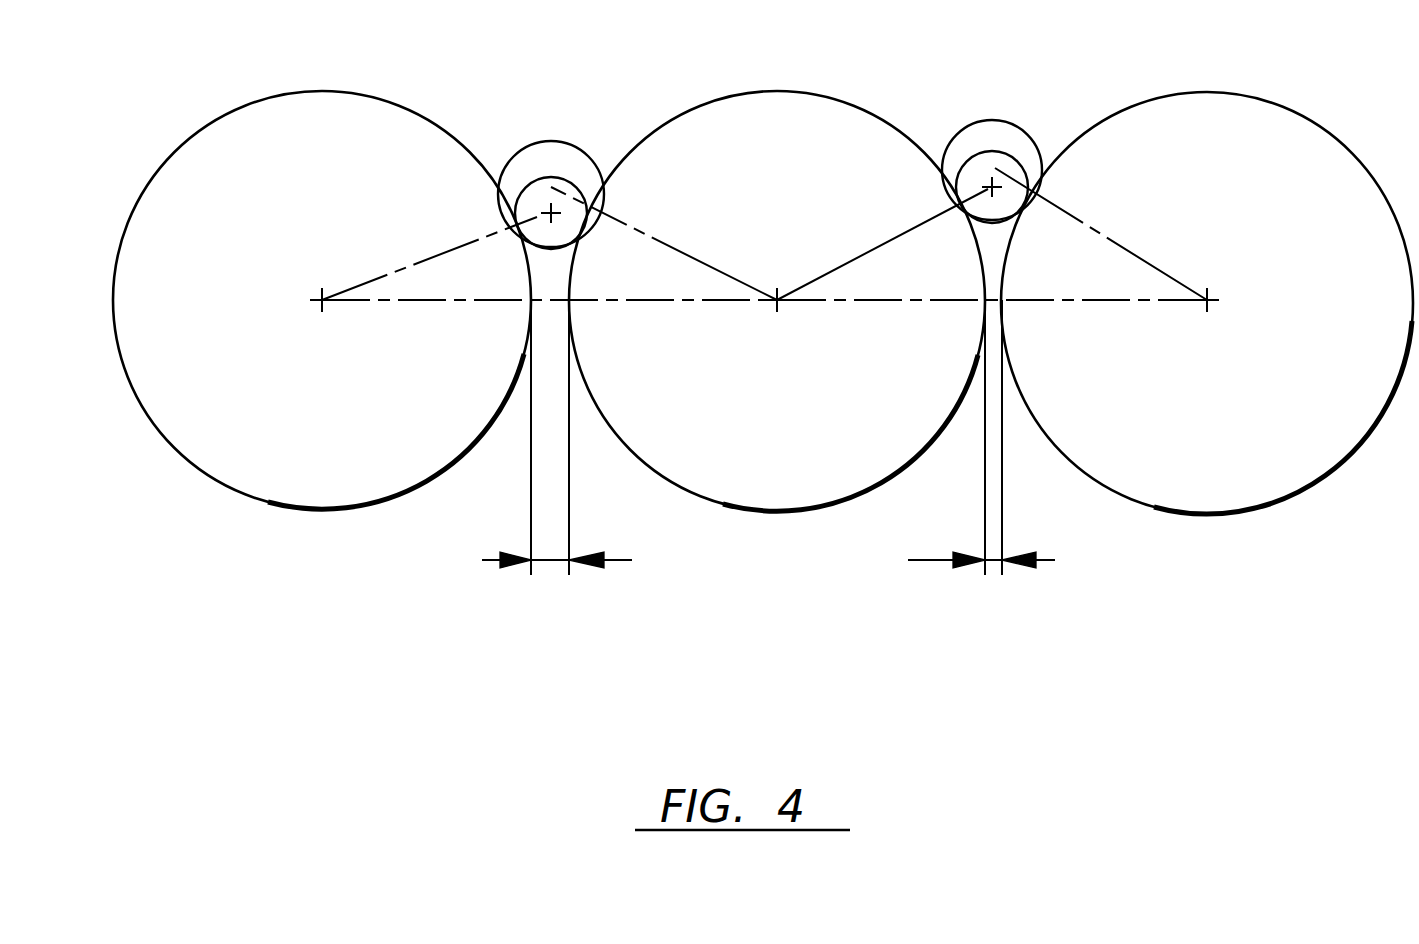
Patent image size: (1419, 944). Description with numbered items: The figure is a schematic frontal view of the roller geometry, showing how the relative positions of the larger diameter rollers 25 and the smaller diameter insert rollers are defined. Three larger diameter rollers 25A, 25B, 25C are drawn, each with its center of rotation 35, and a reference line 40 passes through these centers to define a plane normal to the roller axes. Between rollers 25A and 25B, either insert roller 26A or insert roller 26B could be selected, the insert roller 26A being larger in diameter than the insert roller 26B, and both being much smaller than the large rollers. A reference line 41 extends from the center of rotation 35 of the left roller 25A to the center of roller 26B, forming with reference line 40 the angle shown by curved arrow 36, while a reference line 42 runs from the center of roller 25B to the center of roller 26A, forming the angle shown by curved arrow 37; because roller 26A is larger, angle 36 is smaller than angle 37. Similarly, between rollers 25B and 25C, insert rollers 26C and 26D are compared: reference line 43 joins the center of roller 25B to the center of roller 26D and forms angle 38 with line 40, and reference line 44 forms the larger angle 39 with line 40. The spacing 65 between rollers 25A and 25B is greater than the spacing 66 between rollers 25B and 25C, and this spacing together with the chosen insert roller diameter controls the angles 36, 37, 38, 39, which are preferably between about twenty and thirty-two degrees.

The larger diameter roller 25 is at (330, 496).
The left hand larger diameter roller 25A is at (356, 93).
The larger diameter roller 25B is at (792, 92).
The larger diameter roller 25C is at (1341, 104).
The smaller diameter insert roller 26A is at (552, 141).
The smaller diameter insert roller 26B is at (575, 178).
The smaller diameter insert roller 26C is at (1006, 66).
The smaller diameter insert roller 26D is at (1002, 155).
The center of rotation 35 is at (320, 298).
The angle 36 is at (435, 226).
The angle 37 is at (676, 216).
The angle 38 is at (875, 216).
The angle 39 is at (1128, 217).
The reference line 40 is at (513, 305).
The reference line 41 is at (485, 212).
The reference line 42 is at (730, 278).
The reference line 43 is at (929, 221).
The reference line 44 is at (1060, 208).
The spacing 65 is at (553, 560).
The spacing 66 is at (1000, 560).